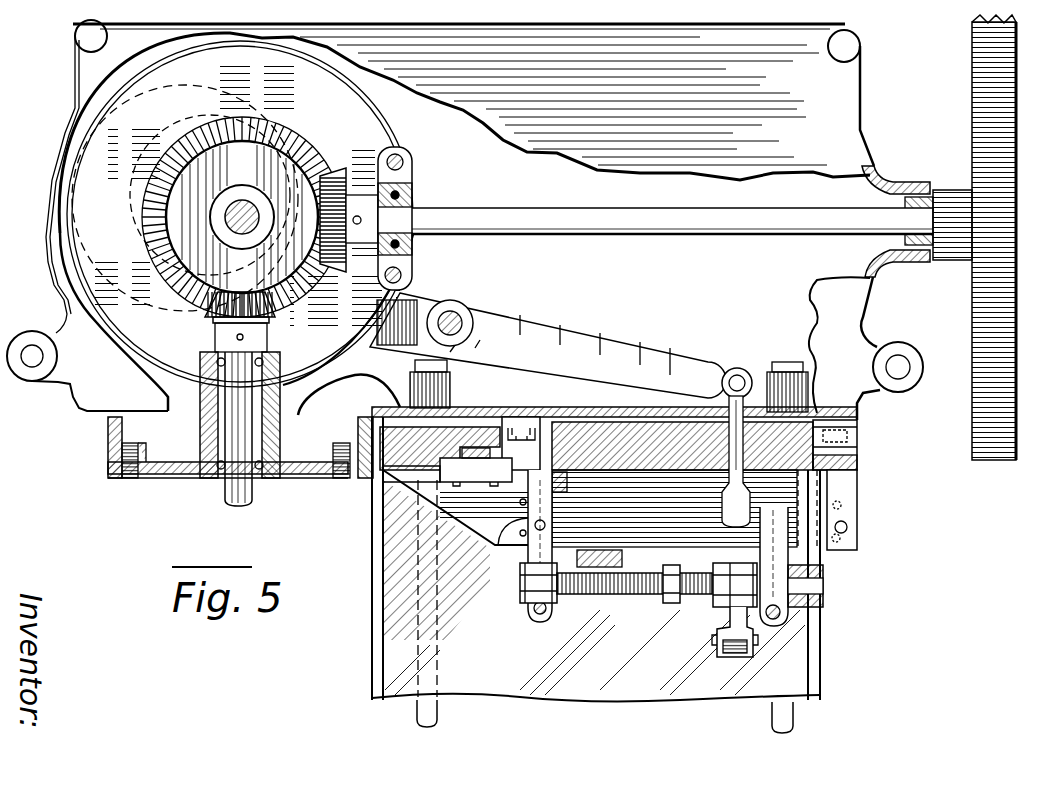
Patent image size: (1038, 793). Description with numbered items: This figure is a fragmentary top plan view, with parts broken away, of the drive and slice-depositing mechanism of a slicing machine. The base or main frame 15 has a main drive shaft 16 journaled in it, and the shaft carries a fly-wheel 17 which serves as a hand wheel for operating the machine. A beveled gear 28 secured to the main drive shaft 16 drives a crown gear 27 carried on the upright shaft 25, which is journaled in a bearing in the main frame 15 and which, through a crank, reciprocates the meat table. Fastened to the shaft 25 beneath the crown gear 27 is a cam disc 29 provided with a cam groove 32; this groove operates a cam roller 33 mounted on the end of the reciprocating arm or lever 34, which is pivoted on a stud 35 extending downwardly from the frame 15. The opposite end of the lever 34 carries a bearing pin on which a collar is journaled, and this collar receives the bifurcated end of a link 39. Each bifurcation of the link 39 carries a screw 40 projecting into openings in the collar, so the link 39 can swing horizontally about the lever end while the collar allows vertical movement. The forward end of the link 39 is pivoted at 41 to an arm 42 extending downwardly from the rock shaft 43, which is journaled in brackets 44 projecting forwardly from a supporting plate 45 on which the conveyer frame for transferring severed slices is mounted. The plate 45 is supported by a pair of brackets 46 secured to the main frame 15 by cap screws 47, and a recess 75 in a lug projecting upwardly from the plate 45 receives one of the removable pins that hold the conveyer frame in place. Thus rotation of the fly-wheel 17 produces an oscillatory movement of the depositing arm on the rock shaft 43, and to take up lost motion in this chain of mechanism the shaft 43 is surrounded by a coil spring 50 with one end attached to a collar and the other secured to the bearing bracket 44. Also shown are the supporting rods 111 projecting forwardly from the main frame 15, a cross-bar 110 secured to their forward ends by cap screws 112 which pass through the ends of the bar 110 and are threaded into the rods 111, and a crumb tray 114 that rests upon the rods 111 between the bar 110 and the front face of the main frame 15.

The base or main frame 15 is at (837, 124).
The main drive shaft 16 is at (596, 230).
The fly-wheel 17 is at (970, 418).
The upright shaft 25 is at (240, 210).
The crown gear 27 is at (304, 142).
The beveled gear 28 is at (333, 273).
The cam disc 29 is at (379, 138).
The cam groove 32 is at (92, 222).
The cam roller 33 is at (272, 236).
The reciprocating arm or lever 34 is at (588, 338).
The stud 35 is at (460, 315).
The link 39 is at (745, 452).
The screw 40 is at (740, 378).
The pivot 41 is at (757, 640).
The arm 42 is at (735, 612).
The rock shaft 43 is at (713, 580).
The brackets 44 is at (537, 606).
The supporting plate 45 is at (640, 484).
The brackets 46 is at (857, 465).
The cap screws 47 is at (850, 434).
The coil spring 50 is at (596, 636).
The recess 75 is at (848, 527).
The cross-bar 110 is at (503, 545).
The supporting rods 111 is at (437, 712).
The cap screws 112 is at (778, 708).
The crumb tray 114 is at (392, 587).